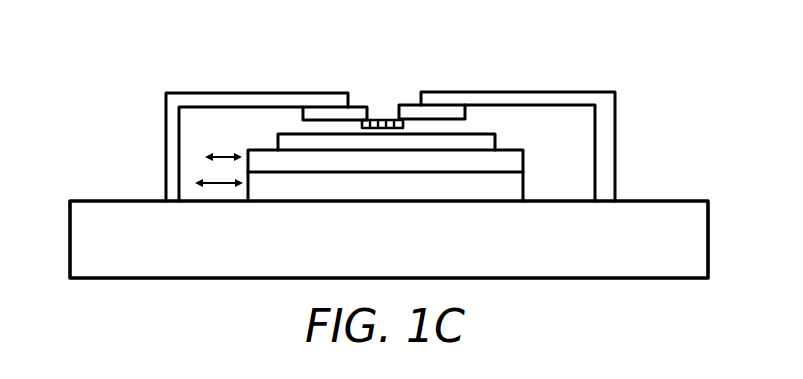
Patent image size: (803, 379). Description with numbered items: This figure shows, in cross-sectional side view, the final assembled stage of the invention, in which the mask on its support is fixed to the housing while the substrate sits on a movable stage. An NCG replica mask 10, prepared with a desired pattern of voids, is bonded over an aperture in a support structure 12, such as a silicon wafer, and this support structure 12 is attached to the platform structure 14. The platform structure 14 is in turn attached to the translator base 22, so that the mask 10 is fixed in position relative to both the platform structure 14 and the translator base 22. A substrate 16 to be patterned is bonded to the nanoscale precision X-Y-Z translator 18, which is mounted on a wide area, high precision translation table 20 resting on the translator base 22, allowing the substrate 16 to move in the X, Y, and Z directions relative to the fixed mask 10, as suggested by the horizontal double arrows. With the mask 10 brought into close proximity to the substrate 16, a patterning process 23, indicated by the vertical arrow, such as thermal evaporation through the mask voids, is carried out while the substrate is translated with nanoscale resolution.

The NCG replica mask 10 is at (382, 118).
The support structure 12 is at (366, 105).
The platform structure 14 is at (531, 92).
The substrate 16 is at (497, 141).
The nanoscale precision X-Y-Z translator 18 is at (527, 157).
The high precision translation table 20 is at (527, 185).
The translator base 22 is at (673, 199).
The patterning process 23 is at (403, 51).